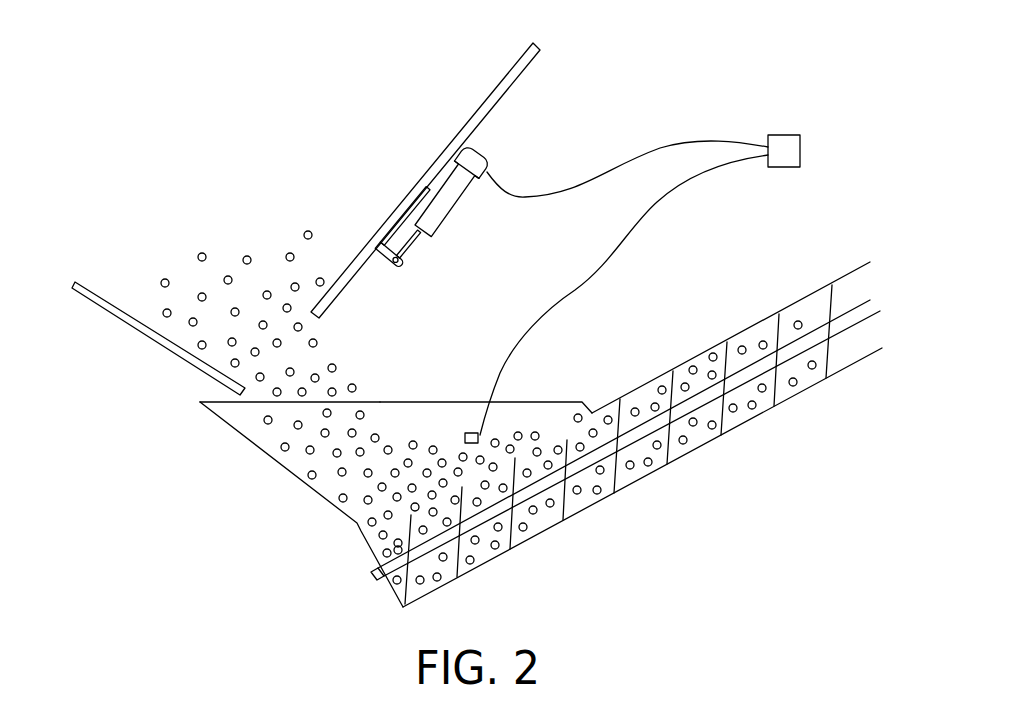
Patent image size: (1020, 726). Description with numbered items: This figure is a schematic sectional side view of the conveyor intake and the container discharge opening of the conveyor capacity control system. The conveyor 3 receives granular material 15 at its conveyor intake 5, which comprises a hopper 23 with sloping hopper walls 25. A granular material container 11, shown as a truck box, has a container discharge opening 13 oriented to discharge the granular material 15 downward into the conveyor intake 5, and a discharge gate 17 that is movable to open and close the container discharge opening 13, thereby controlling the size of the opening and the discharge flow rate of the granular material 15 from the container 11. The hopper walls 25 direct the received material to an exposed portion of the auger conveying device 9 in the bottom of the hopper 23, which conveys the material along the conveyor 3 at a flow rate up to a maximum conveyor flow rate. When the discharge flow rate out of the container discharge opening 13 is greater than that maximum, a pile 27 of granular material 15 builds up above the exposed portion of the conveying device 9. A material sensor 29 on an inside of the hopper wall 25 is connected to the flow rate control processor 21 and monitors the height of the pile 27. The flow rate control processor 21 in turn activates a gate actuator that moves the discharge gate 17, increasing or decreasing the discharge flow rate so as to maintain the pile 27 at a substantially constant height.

The conveyor 3 is at (740, 427).
The conveyor intake 5 is at (223, 421).
The conveying device 9 is at (567, 441).
The granular material container 11 is at (145, 340).
The container discharge opening 13 is at (283, 353).
The granular material 15 is at (360, 485).
The discharge gate 17 is at (362, 268).
The flow rate control processor 21 is at (802, 148).
The hopper 23 is at (270, 457).
The hopper walls 25 is at (397, 400).
The pile 27 is at (521, 428).
The material sensor 29 is at (472, 433).